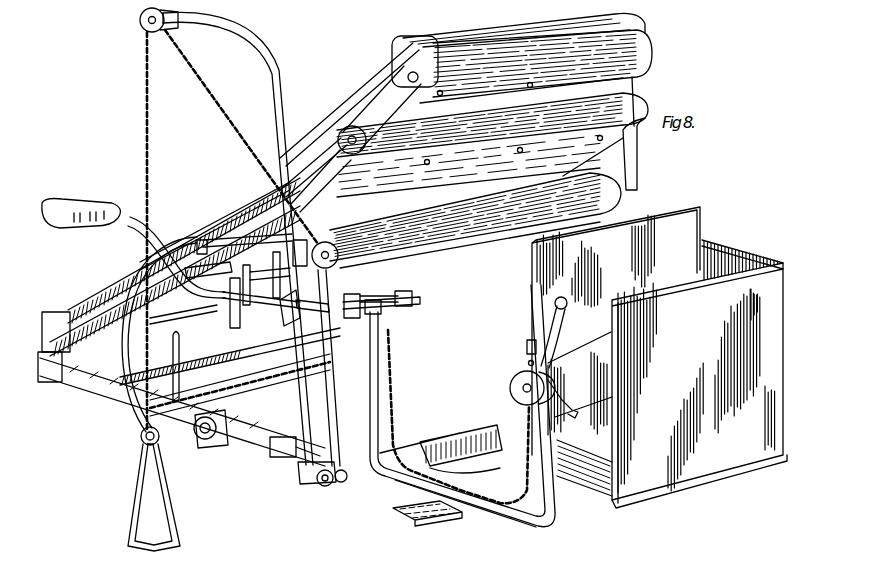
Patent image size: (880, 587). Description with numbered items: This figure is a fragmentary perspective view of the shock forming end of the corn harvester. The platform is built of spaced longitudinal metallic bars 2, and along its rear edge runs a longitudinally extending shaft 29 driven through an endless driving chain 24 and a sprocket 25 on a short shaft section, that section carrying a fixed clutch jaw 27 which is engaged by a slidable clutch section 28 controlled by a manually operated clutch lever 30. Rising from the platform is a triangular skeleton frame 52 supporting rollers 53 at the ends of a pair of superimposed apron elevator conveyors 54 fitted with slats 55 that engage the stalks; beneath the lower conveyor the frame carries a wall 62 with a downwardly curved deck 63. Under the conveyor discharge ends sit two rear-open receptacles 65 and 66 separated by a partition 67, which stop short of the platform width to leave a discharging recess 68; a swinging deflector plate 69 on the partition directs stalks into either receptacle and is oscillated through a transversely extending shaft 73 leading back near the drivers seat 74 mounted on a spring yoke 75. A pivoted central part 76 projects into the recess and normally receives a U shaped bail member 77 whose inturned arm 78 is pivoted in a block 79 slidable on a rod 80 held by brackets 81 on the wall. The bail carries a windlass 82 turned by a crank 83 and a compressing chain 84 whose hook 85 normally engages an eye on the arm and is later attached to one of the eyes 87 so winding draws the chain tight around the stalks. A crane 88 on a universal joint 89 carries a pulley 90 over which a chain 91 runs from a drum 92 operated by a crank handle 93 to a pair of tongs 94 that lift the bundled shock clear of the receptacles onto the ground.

The metallic bars 2 is at (302, 458).
The endless driving chain 24 is at (229, 405).
The sprocket 25 is at (232, 426).
The fixed clutch jaw 27 is at (148, 447).
The slidable clutch section 28 is at (140, 438).
The longitudinally extending shaft 29 is at (88, 400).
The clutch lever 30 is at (181, 372).
The skeleton frame 52 is at (630, 167).
The rollers 53 is at (363, 131).
The elevator conveyors 54 is at (304, 134).
The slats 55 is at (325, 118).
The wall 62 is at (327, 486).
The downwardly curved deck 63 is at (440, 220).
The receptacle 65 is at (540, 318).
The receptacle 66 is at (665, 302).
The partition 67 is at (568, 410).
The discharging recess 68 is at (560, 499).
The deflector plate 69 is at (628, 240).
The transversely extending shaft 73 is at (262, 292).
The drivers seat 74 is at (92, 203).
The spring yoke 75 is at (120, 274).
The pivoted central part 76 is at (432, 522).
The bail member 77 is at (525, 532).
The arm 78 is at (395, 393).
The block 79 is at (408, 296).
The rod 80 is at (378, 298).
The brackets 81 is at (350, 294).
The windlass 82 is at (510, 383).
The crank 83 is at (612, 397).
The compressing chain 84 is at (410, 474).
The hook 85 is at (378, 336).
The eyes 87 is at (527, 345).
The crane 88 is at (275, 458).
The universal joint 89 is at (316, 482).
The pulley 90 is at (143, 30).
The chain 91 is at (146, 108).
The drum 92 is at (333, 251).
The crank handle 93 is at (284, 302).
The tongs 94 is at (165, 500).